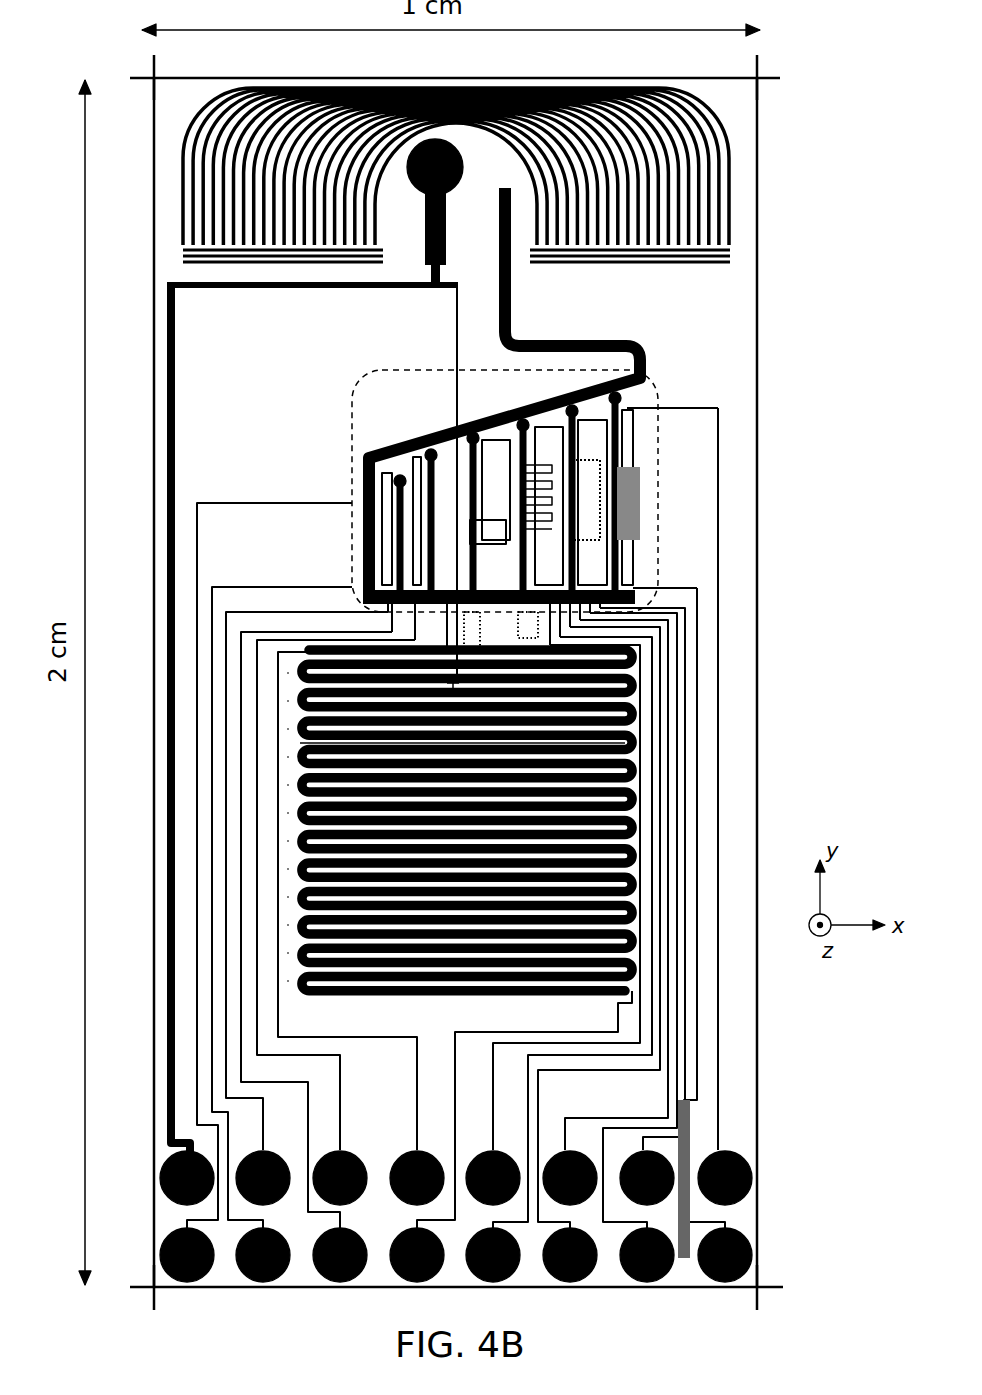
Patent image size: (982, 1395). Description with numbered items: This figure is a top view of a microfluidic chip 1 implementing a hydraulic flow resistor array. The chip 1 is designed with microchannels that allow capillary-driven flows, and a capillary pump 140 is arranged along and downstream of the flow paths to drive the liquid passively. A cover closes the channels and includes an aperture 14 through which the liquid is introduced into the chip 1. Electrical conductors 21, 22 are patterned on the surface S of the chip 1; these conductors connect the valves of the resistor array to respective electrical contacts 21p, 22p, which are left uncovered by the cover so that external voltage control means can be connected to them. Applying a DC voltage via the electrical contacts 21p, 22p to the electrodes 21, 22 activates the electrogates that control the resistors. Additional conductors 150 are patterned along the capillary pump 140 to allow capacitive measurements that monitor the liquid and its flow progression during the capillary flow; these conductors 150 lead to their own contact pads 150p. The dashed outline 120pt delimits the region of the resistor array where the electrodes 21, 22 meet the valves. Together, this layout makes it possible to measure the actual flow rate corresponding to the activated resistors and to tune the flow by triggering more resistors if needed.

The microfluidic chip 1 is at (797, 1298).
The aperture 14 is at (482, 148).
The electrical conductor 22 is at (178, 376).
The electrical conductor 21 is at (506, 410).
The sensor region outline 120pt is at (352, 469).
The capillary pump 140 is at (300, 857).
The conductors 150 is at (305, 750).
The electrical contact 22p is at (162, 1184).
The electrical contact 21p is at (753, 1188).
The contact pad of temperature sensor 150p is at (392, 1266).
The surface S is at (716, 337).